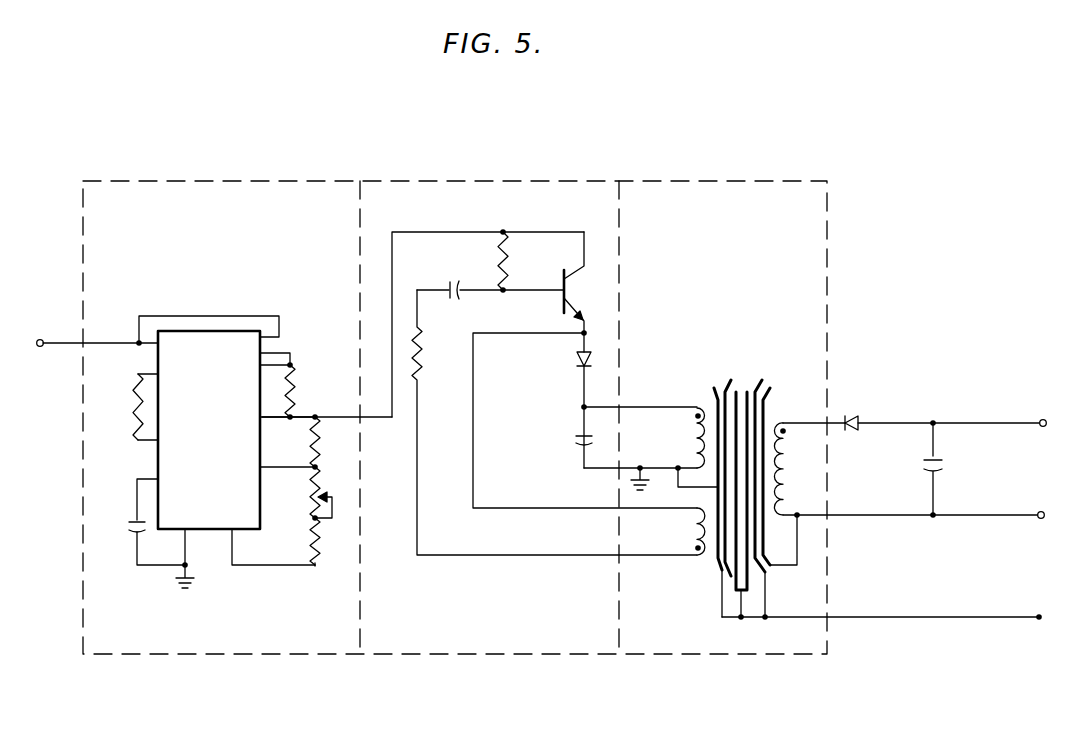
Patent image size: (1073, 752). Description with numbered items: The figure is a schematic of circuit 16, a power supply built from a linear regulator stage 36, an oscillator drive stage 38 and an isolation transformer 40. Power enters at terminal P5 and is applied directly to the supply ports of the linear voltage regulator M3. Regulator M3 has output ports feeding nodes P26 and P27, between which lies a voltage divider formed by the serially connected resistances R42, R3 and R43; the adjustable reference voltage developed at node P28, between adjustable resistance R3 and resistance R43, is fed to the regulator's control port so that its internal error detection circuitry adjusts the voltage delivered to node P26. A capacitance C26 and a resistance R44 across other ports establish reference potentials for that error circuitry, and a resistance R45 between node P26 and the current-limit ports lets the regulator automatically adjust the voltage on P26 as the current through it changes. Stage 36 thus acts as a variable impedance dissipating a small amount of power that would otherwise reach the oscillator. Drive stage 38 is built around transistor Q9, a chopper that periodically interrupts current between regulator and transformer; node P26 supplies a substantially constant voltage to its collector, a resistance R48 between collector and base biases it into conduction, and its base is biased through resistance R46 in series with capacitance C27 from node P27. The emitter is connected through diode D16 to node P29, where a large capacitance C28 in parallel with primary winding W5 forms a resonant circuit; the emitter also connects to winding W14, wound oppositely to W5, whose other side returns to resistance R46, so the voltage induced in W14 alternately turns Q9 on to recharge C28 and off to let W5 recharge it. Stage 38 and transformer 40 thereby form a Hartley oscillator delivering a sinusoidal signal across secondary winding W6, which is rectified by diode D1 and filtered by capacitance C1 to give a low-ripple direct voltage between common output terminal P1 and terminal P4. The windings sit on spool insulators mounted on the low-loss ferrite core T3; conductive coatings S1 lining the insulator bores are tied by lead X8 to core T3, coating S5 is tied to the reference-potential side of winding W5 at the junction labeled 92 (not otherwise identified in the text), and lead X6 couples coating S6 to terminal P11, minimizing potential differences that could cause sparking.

The circuit 16 is at (493, 179).
The linear regulator stage 36 is at (211, 645).
The oscillator drive stage 38 is at (501, 645).
The isolation transformer 40 is at (723, 644).
The winding tap connection 92 is at (690, 487).
The terminal P5 is at (36, 343).
The linear voltage regulator M3 is at (158, 457).
The resistance R44 is at (133, 425).
The capacitance C26 is at (129, 524).
The resistance R45 is at (294, 385).
The node P26 is at (297, 414).
The node P28 is at (278, 420).
The resistance R43 is at (328, 444).
The adjustable resistance R3 is at (311, 497).
The resistance R42 is at (310, 546).
The node P27 is at (315, 568).
The resistance R48 is at (532, 256).
The capacitance C27 is at (456, 284).
The transistor Q9 is at (565, 290).
The resistance R46 is at (418, 360).
The diode D16 is at (575, 366).
The node P29 is at (576, 409).
The capacitance C28 is at (577, 440).
The primary winding W5 is at (697, 445).
The winding W14 is at (697, 532).
The winding W6 is at (780, 490).
The core T3 is at (740, 389).
The coatings S1 is at (715, 388).
The coating S5 is at (712, 574).
The coating S6 is at (772, 392).
The lead X6 is at (798, 546).
The lead X8 is at (803, 620).
The diode D1 is at (848, 430).
The capacitance C1 is at (943, 460).
The terminal P4 is at (1046, 420).
The common output terminal P1 is at (1041, 518).
The terminal P11 is at (1044, 620).